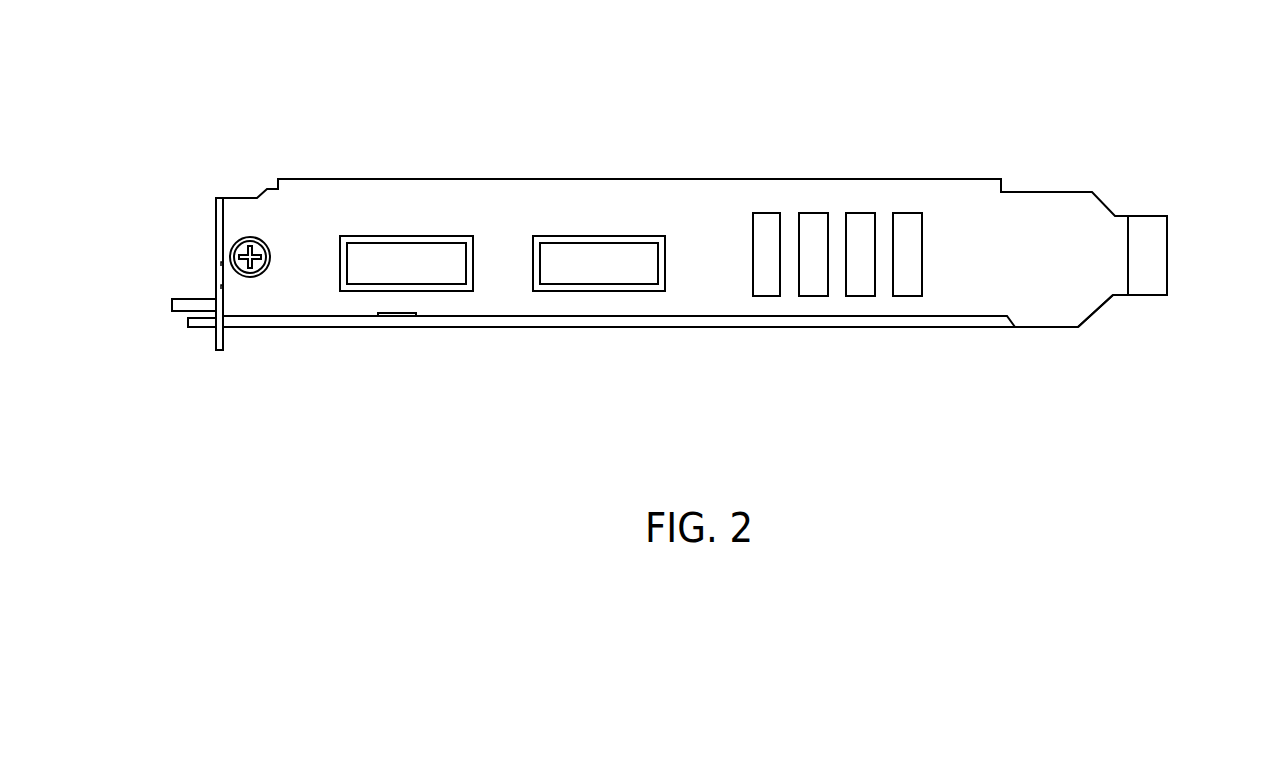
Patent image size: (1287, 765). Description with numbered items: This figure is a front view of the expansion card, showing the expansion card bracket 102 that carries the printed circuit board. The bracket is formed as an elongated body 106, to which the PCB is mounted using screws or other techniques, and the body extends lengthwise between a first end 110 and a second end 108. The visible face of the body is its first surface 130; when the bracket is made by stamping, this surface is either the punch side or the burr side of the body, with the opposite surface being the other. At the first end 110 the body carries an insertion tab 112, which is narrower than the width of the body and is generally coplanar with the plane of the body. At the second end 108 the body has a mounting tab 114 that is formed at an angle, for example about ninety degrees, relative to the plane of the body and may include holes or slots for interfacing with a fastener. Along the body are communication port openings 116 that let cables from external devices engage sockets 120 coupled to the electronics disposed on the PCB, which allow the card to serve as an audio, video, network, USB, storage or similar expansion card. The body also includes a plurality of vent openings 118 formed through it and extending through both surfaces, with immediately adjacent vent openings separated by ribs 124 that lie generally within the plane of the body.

The expansion card bracket 102 is at (1097, 193).
The elongated body 106 is at (491, 205).
The second end 108 is at (213, 218).
The first end 110 is at (1167, 257).
The insertion tab 112 is at (1078, 297).
The mounting tab 114 is at (222, 222).
The communication port openings 116 is at (548, 236).
The vent openings 118 is at (765, 227).
The sockets 120 is at (578, 284).
The ribs 124 is at (789, 235).
The first surface 130 is at (1028, 217).